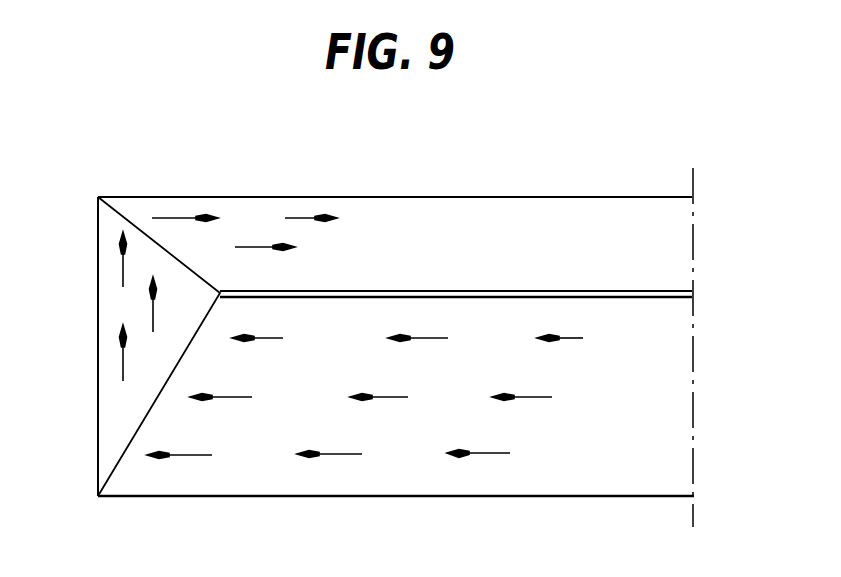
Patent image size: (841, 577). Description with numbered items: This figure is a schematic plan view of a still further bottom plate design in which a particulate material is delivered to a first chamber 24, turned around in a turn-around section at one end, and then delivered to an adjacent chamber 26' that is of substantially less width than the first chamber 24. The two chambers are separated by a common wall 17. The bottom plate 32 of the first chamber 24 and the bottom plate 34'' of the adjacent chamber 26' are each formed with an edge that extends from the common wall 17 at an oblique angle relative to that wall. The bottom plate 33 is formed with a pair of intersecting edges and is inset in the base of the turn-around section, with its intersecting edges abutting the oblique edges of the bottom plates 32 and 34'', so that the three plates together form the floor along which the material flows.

The first chamber 24 is at (750, 456).
The common wall 17 is at (652, 290).
The adjacent chamber 26' is at (512, 244).
The bottom plate 32 is at (280, 470).
The bottom plate 33 is at (128, 303).
The bottom plate 34'' is at (244, 207).